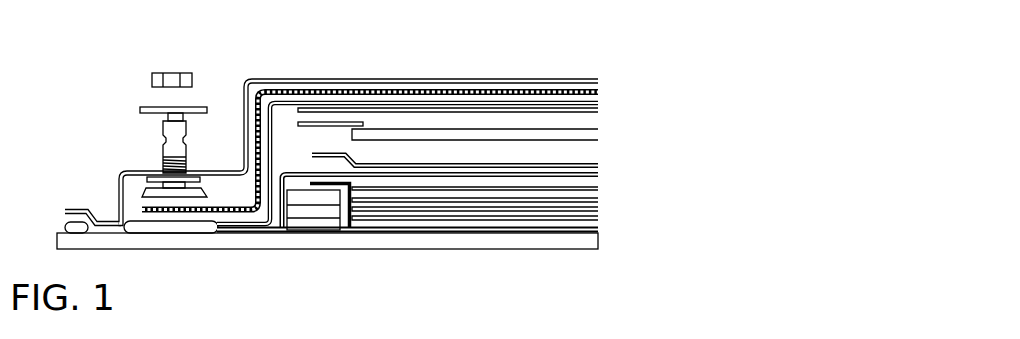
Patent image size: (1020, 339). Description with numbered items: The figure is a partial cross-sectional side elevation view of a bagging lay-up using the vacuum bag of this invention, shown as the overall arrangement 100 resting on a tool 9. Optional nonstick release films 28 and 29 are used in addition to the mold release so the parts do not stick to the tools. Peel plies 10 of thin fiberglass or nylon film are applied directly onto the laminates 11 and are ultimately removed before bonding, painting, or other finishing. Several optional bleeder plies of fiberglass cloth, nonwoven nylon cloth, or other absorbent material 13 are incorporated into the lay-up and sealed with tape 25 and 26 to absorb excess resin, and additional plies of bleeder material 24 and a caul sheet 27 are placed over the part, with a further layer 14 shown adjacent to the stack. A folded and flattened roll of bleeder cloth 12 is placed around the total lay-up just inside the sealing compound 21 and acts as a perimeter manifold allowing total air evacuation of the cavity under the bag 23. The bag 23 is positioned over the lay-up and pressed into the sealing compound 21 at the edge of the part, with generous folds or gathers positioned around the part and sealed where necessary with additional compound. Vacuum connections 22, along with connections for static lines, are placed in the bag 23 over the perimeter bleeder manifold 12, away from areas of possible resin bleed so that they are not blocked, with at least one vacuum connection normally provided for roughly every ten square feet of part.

The substrate 9 is at (408, 233).
The peel plies 10 is at (493, 193).
The laminates 11 is at (555, 208).
The folded and flattened roll of bleeder cloth 12 is at (177, 228).
The bleeder plies 13 is at (252, 232).
The connection block 14 is at (310, 212).
The sealing compound 21 is at (76, 226).
The vacuum connections 22 is at (187, 163).
The bag 23 is at (315, 79).
The bleeder material 24 is at (348, 90).
The tape 25 is at (362, 102).
The tape 26 is at (365, 124).
The caul sheet 27 is at (457, 129).
The nonstick release film 28 is at (515, 163).
The nonstick release film 29 is at (594, 102).
The electrochemical device 100 is at (641, 213).